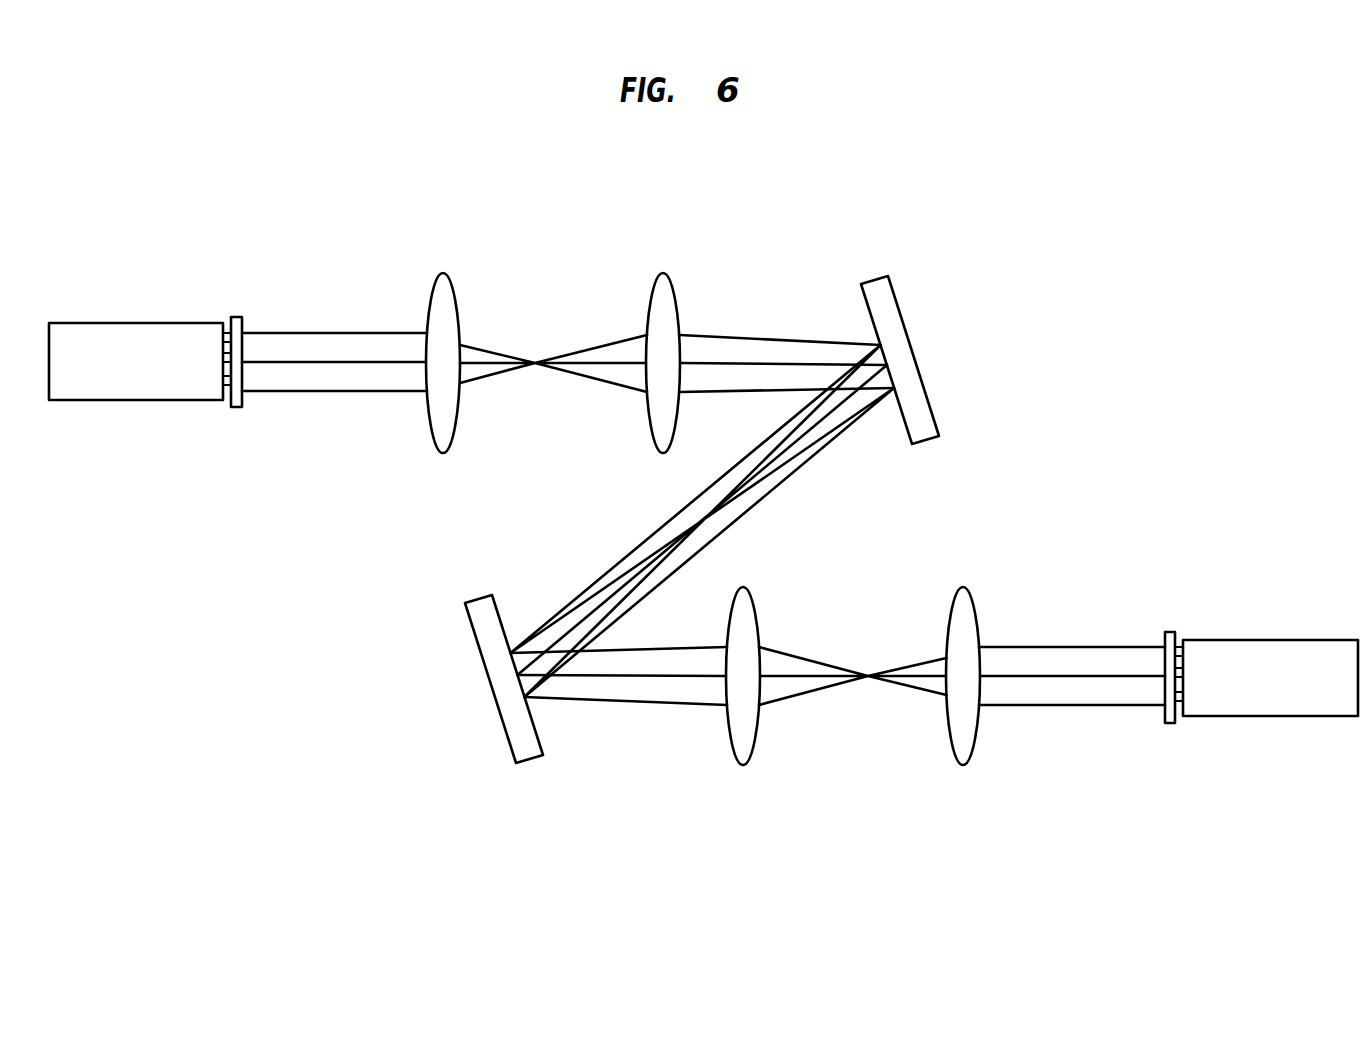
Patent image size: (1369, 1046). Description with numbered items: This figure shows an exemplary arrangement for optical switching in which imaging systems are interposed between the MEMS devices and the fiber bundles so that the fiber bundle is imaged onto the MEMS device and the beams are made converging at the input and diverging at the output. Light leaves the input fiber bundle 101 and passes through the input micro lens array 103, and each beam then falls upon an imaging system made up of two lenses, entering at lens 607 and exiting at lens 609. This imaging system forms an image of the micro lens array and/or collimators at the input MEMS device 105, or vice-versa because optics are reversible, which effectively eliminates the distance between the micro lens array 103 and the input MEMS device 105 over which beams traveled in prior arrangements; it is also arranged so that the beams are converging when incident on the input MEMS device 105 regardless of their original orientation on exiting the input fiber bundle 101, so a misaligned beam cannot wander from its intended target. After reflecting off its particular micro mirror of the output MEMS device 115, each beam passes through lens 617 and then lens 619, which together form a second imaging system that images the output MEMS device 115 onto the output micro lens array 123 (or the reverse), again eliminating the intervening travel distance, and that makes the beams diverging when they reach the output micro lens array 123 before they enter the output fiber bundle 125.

The input fiber bundle 101 is at (131, 323).
The input micro lens array 103 is at (240, 407).
The lens 607 is at (443, 273).
The lens 609 is at (663, 273).
The input MEMS device 105 is at (880, 278).
The output MEMS device 115 is at (527, 763).
The lens 617 is at (743, 587).
The lens 619 is at (963, 587).
The output micro lens array 123 is at (1172, 724).
The output fiber bundle 125 is at (1266, 640).